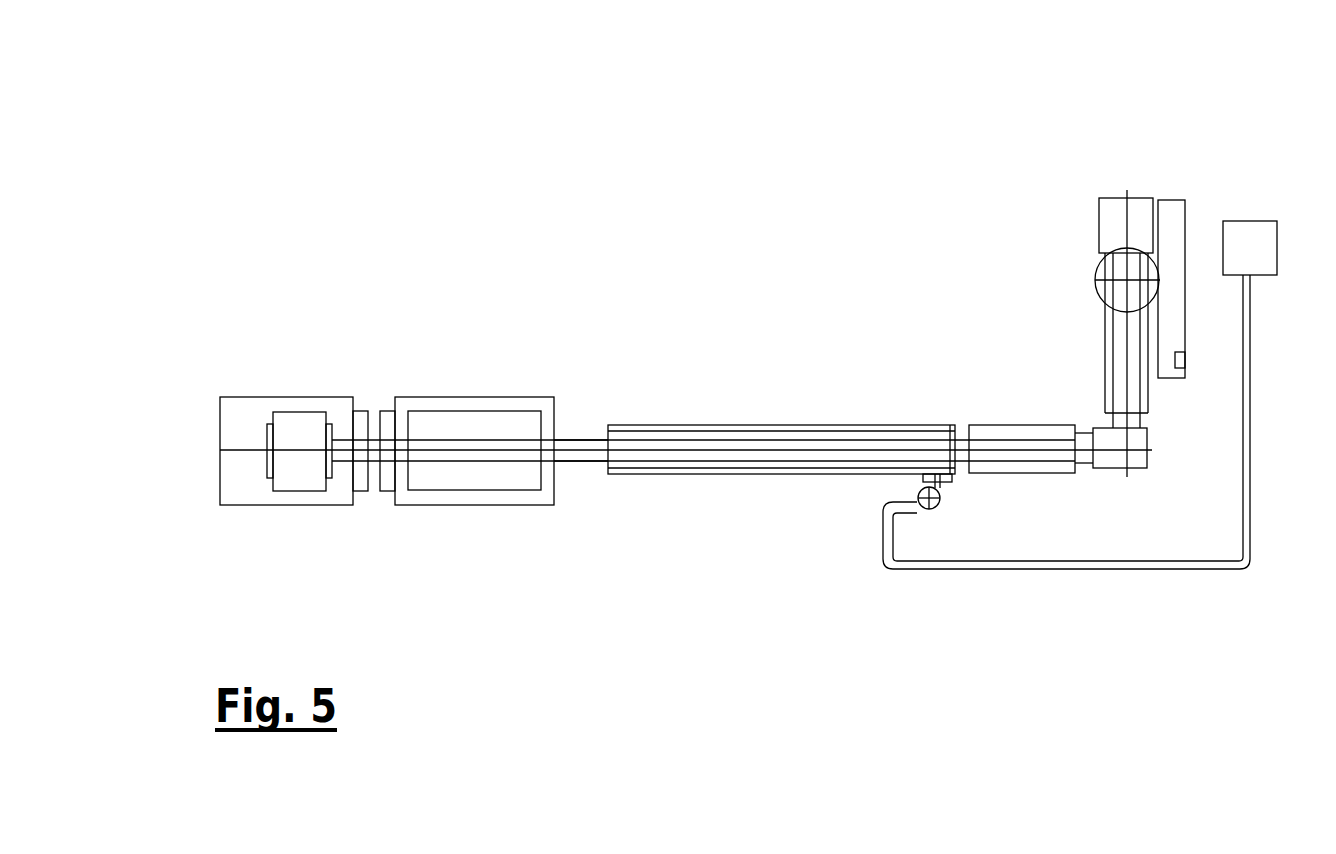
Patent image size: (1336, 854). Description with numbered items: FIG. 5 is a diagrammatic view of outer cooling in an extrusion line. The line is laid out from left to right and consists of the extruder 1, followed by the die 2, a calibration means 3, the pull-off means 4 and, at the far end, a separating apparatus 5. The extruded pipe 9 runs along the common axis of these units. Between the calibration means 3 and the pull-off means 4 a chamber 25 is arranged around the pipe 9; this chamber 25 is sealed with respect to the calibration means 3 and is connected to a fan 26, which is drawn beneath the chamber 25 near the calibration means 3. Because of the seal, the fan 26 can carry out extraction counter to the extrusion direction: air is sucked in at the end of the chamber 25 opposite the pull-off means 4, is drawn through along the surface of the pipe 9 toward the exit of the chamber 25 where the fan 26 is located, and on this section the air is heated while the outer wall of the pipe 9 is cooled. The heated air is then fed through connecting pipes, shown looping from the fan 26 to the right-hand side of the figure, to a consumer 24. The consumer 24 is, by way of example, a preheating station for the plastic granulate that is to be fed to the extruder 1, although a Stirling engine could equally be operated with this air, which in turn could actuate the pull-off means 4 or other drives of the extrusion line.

The extruder 1 is at (1117, 335).
The die 2 is at (1112, 437).
The calibration means 3 is at (992, 427).
The pull-off means 4 is at (472, 422).
The separating apparatus 5 is at (303, 427).
The pipe 9 is at (582, 443).
The consumer 24 is at (1253, 233).
The chamber 25 is at (780, 425).
The fan 26 is at (935, 500).